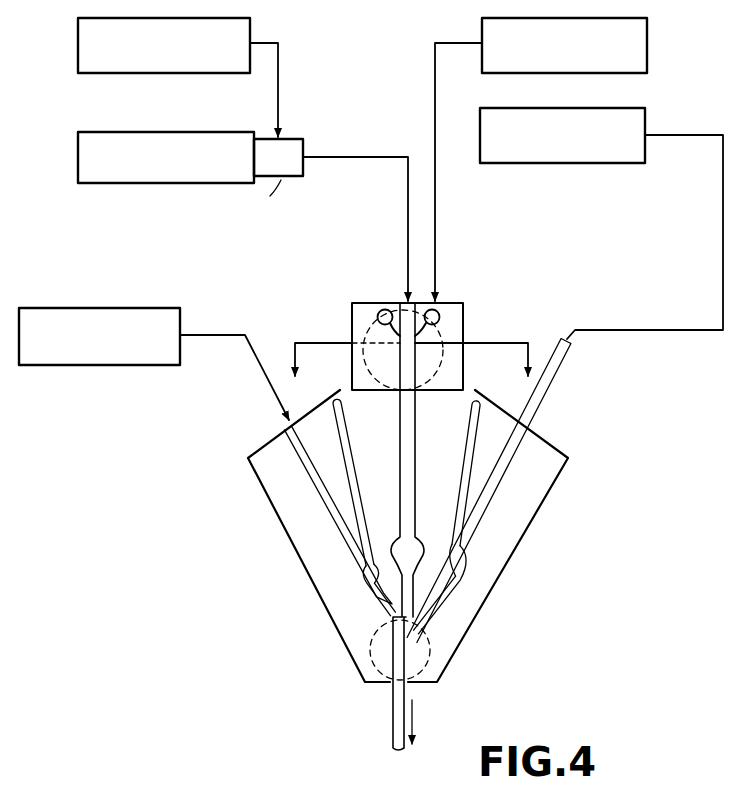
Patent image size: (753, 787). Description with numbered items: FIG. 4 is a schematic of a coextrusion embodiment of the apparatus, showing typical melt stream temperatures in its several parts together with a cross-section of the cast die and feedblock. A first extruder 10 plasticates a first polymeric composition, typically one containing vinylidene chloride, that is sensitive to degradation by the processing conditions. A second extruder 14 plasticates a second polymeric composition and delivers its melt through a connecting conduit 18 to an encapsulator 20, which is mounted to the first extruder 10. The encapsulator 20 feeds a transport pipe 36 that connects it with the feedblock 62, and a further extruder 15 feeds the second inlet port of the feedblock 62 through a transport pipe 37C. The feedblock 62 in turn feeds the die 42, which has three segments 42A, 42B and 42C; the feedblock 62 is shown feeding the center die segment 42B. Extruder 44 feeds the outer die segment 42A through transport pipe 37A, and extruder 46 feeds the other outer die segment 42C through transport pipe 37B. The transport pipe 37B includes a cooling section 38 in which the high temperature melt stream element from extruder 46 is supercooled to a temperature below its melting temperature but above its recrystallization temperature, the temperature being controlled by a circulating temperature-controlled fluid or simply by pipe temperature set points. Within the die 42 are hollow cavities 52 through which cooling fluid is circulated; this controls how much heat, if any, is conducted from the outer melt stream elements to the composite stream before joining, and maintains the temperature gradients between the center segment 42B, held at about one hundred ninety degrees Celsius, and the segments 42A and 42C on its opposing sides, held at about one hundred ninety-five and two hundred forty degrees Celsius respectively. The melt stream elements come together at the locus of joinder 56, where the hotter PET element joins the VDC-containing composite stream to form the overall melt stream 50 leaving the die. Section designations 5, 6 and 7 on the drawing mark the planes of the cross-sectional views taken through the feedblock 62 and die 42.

The second extruder 14 is at (112, 60).
The first extruder 10 is at (108, 170).
The connecting conduit 18 is at (281, 75).
The encapsulator 20 is at (303, 136).
The transport pipe 36 is at (388, 152).
The extruder 15 is at (624, 60).
The transport pipe 37C is at (437, 212).
The extruder 46 is at (516, 150).
The transport pipe 37B is at (722, 255).
The extruder 44 is at (52, 350).
The transport pipe 37A is at (255, 352).
The feedblock 62 is at (463, 320).
The section line 5 is at (370, 312).
The section line 6 is at (411, 374).
The die 42 is at (540, 512).
The die segment 42A is at (276, 436).
The center die segment 42B is at (469, 390).
The die segment 42C is at (560, 450).
The cooling section 38 is at (573, 356).
The hollow cavities 52 is at (345, 430).
The overall melt stream 50 is at (392, 730).
The locus of joinder 56 is at (406, 688).
The section line 7 is at (432, 657).